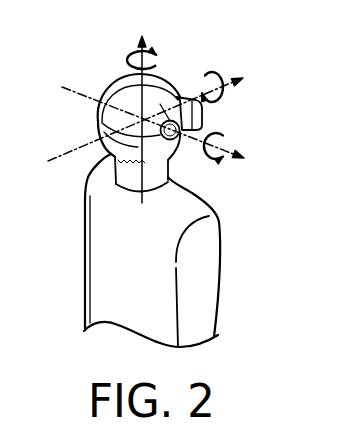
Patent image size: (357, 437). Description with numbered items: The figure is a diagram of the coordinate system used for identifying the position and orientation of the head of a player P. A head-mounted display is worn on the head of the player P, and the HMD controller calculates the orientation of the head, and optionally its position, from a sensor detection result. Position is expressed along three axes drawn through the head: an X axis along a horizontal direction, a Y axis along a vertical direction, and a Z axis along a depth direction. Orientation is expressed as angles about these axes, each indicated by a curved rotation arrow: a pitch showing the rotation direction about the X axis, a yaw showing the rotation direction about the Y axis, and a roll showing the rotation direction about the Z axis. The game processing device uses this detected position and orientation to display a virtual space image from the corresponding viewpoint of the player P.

The player P is at (86, 259).
The X axis X is at (153, 110).
The Y axis Y is at (142, 103).
The Z axis Z is at (161, 131).